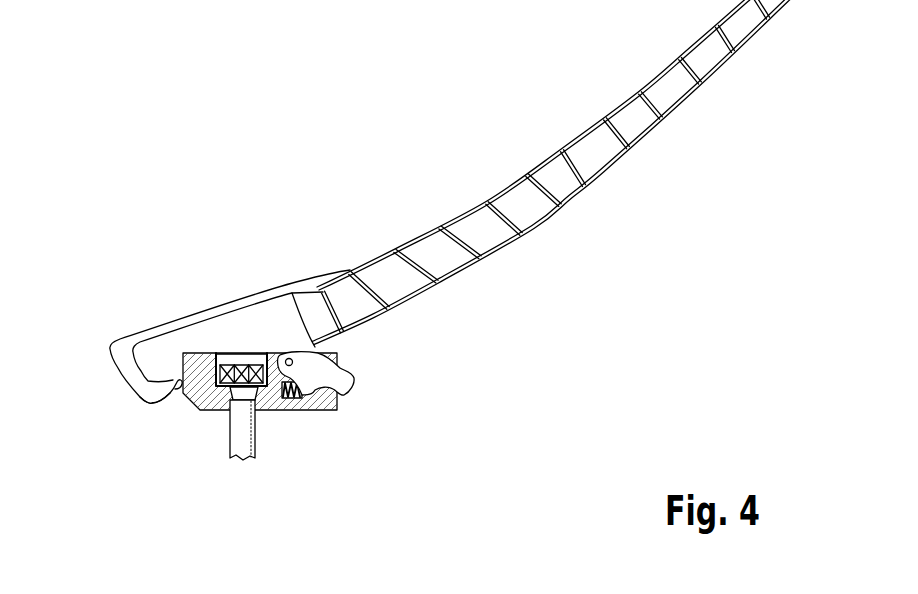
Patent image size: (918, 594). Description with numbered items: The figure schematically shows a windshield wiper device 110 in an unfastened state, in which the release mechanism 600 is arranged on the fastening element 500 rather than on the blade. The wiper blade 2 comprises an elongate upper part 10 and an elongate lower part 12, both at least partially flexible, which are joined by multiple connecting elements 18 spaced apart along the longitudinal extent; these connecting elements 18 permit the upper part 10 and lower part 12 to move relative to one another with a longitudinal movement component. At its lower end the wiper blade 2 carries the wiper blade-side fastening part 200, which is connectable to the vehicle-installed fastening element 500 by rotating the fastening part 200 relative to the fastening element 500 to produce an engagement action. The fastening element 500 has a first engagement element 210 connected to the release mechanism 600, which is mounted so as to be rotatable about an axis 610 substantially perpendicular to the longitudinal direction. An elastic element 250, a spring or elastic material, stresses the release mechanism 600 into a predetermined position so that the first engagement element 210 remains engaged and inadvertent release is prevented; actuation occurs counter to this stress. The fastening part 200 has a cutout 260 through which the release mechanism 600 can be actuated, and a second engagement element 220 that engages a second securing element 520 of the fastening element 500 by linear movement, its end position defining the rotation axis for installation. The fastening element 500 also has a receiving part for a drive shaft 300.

The wiper blade 2 is at (647, 132).
The elongate upper part 10 is at (687, 50).
The elongate lower part 12 is at (550, 213).
The connecting elements 18 is at (617, 133).
The windshield wiper device 110 is at (395, 119).
The wiper blade-side fastening part 200 is at (140, 276).
The first engagement element 210 is at (343, 363).
The second engagement element 220 is at (173, 398).
The elastic element 250 is at (298, 400).
The cutout 260 is at (289, 358).
The drive shaft 300 is at (235, 442).
The fastening element 500 is at (342, 445).
The second securing element 520 is at (203, 400).
The release mechanism 600 is at (376, 407).
The axis 610 is at (243, 352).